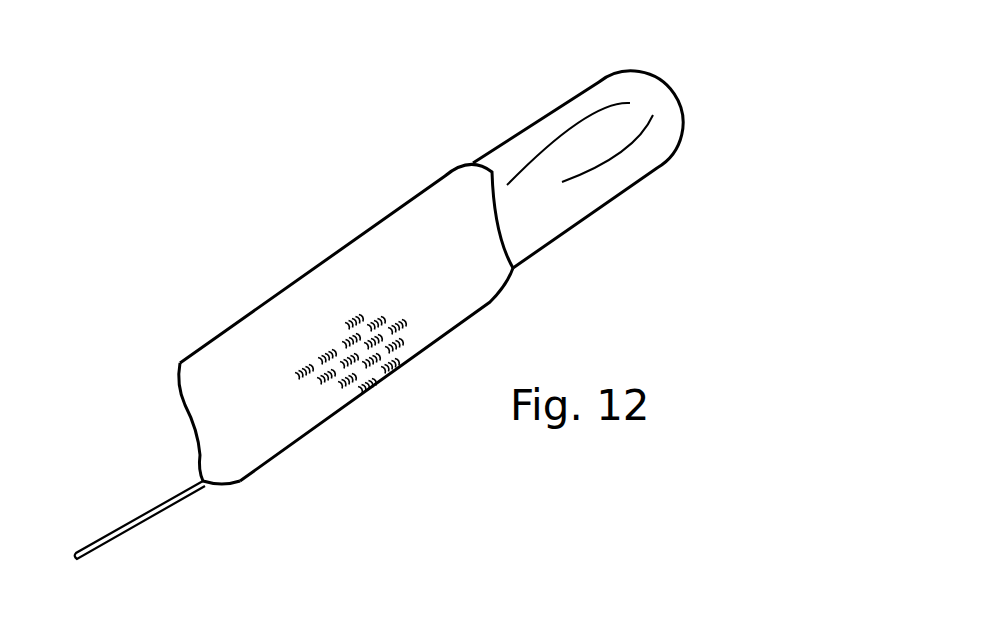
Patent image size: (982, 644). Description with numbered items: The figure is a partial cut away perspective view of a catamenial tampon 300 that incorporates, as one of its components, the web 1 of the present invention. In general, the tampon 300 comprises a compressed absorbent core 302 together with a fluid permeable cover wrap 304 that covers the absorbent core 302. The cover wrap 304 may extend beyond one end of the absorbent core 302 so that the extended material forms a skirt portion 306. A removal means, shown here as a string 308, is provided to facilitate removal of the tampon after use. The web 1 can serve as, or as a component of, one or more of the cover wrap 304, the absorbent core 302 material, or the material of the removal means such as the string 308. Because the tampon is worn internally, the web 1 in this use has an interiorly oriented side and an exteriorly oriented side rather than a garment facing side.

The catamenial tampon 300 is at (273, 262).
The web 1 is at (428, 218).
The compressed absorbent core 302 is at (642, 157).
The fluid permeable cover wrap 304 is at (300, 425).
The skirt portion 306 is at (197, 372).
The string 308 is at (127, 532).